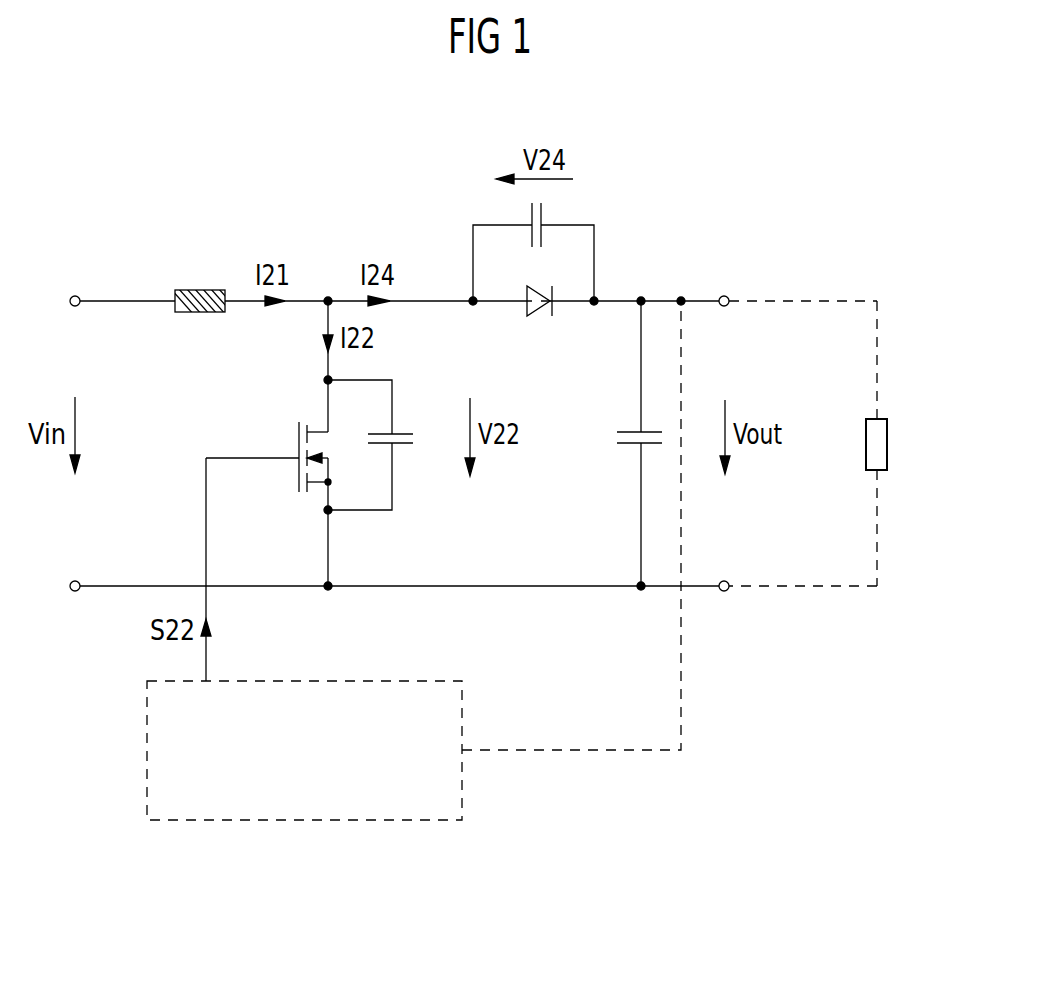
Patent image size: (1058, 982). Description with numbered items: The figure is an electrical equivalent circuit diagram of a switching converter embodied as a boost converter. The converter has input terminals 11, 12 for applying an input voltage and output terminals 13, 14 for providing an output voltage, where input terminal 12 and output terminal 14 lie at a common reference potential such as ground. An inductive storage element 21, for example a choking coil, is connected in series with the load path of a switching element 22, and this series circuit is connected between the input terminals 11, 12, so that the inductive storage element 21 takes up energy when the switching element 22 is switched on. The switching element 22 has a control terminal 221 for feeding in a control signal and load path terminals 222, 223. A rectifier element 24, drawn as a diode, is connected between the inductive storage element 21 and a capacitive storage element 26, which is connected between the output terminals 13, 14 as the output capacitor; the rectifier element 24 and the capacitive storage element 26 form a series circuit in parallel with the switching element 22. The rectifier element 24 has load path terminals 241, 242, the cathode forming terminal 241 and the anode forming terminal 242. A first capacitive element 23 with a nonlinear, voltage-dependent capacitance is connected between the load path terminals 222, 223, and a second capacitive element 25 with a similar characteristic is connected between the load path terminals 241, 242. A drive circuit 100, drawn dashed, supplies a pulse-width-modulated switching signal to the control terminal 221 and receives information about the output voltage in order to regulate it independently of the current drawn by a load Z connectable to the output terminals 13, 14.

The input terminal 11 is at (76, 295).
The input terminal 12 is at (75, 592).
The output terminal 13 is at (725, 295).
The output terminal 14 is at (724, 592).
The inductive storage element 21 is at (200, 288).
The switching element 22 is at (299, 433).
The control terminal 221 is at (297, 466).
The load path terminal 222 is at (328, 362).
The load path terminal 223 is at (328, 537).
The capacitive element 23 is at (407, 430).
The rectifier element 24 is at (537, 317).
The load path terminal 241 is at (596, 298).
The load path terminal 242 is at (473, 298).
The second capacitive element 25 is at (530, 210).
The capacitive storage element 26 is at (626, 430).
The drive circuit 100 is at (462, 718).
The load Z is at (888, 445).